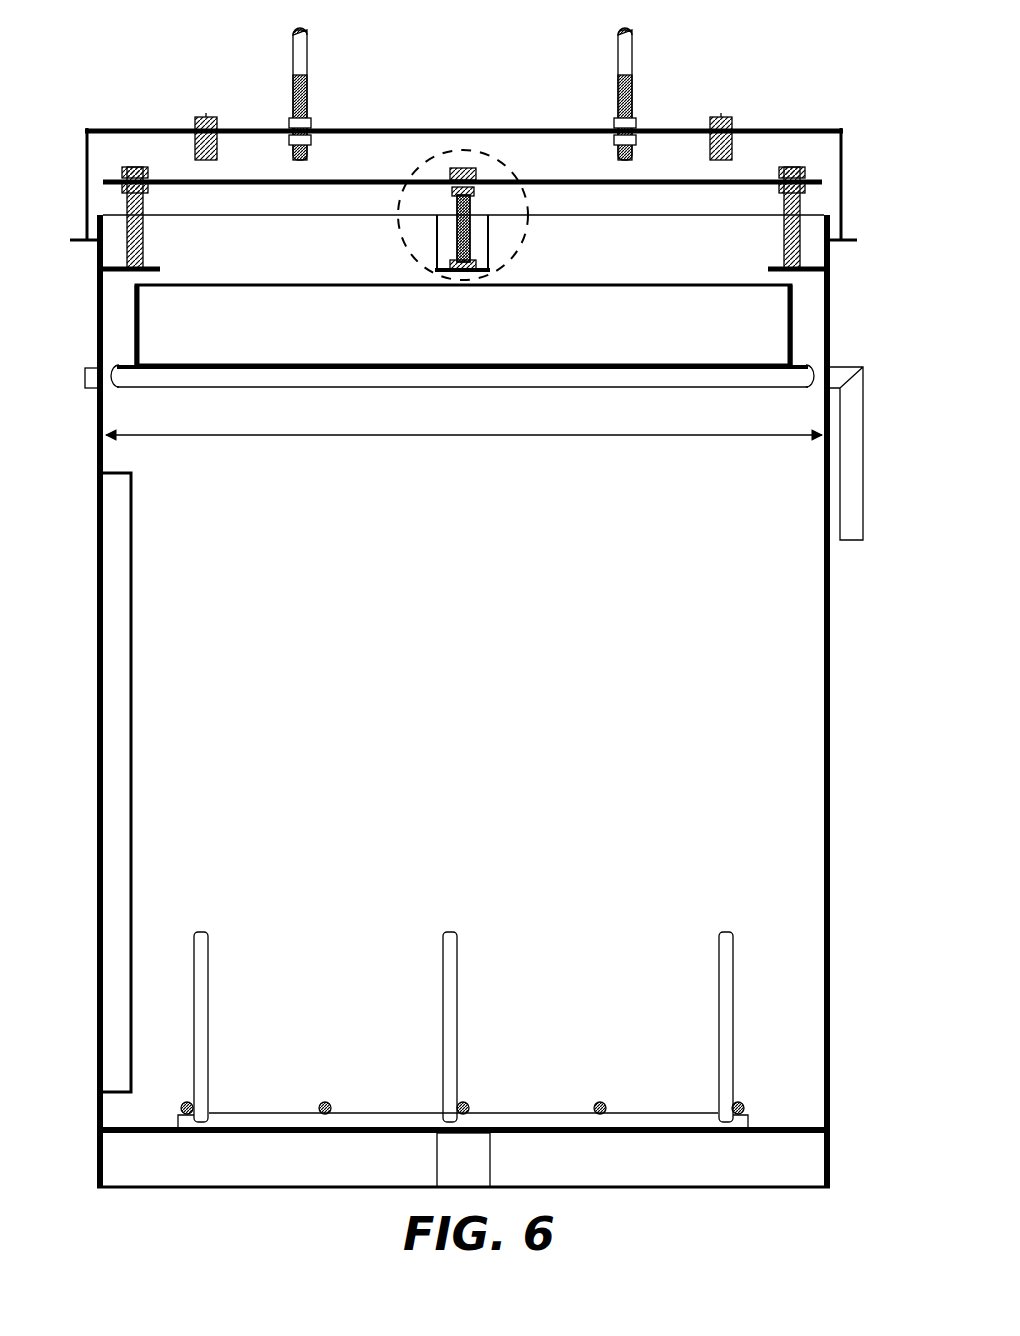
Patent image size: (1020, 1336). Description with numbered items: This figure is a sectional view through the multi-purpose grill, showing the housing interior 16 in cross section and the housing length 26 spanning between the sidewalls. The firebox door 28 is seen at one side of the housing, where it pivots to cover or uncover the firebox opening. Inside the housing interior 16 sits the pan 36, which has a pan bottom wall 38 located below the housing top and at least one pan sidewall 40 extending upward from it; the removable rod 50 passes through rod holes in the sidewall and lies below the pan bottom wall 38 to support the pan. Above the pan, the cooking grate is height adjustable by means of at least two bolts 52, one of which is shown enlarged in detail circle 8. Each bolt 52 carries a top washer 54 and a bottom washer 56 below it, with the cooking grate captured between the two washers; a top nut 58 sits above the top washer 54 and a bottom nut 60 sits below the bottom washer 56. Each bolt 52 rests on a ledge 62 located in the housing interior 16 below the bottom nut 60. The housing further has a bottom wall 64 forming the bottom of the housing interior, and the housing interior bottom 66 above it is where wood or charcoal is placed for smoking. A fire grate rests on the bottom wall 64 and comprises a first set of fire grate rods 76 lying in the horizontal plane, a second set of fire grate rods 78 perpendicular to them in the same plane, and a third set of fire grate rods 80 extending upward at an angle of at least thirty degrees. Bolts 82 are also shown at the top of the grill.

The detail view circle 8 is at (490, 148).
The housing interior 16 is at (570, 745).
The housing length 26 is at (133, 440).
The firebox door 28 is at (97, 893).
The pan 36 is at (126, 333).
The pan bottom wall 38 is at (742, 366).
The pan sidewall 40 is at (793, 318).
The removable rod 50 is at (852, 462).
The bolt 52 is at (128, 247).
The top washer 54 is at (476, 180).
The bottom washer 56 is at (476, 192).
The top nut 58 is at (458, 180).
The bottom nut 60 is at (470, 195).
The ledge 62 is at (108, 225).
The bottom wall 64 is at (690, 1135).
The housing interior bottom 66 is at (785, 1113).
The first set of fire grate rods 76 is at (186, 1101).
The second set of fire grate rods 78 is at (245, 1122).
The third set of fire grate rods 80 is at (209, 975).
The bolt 82 is at (308, 55).